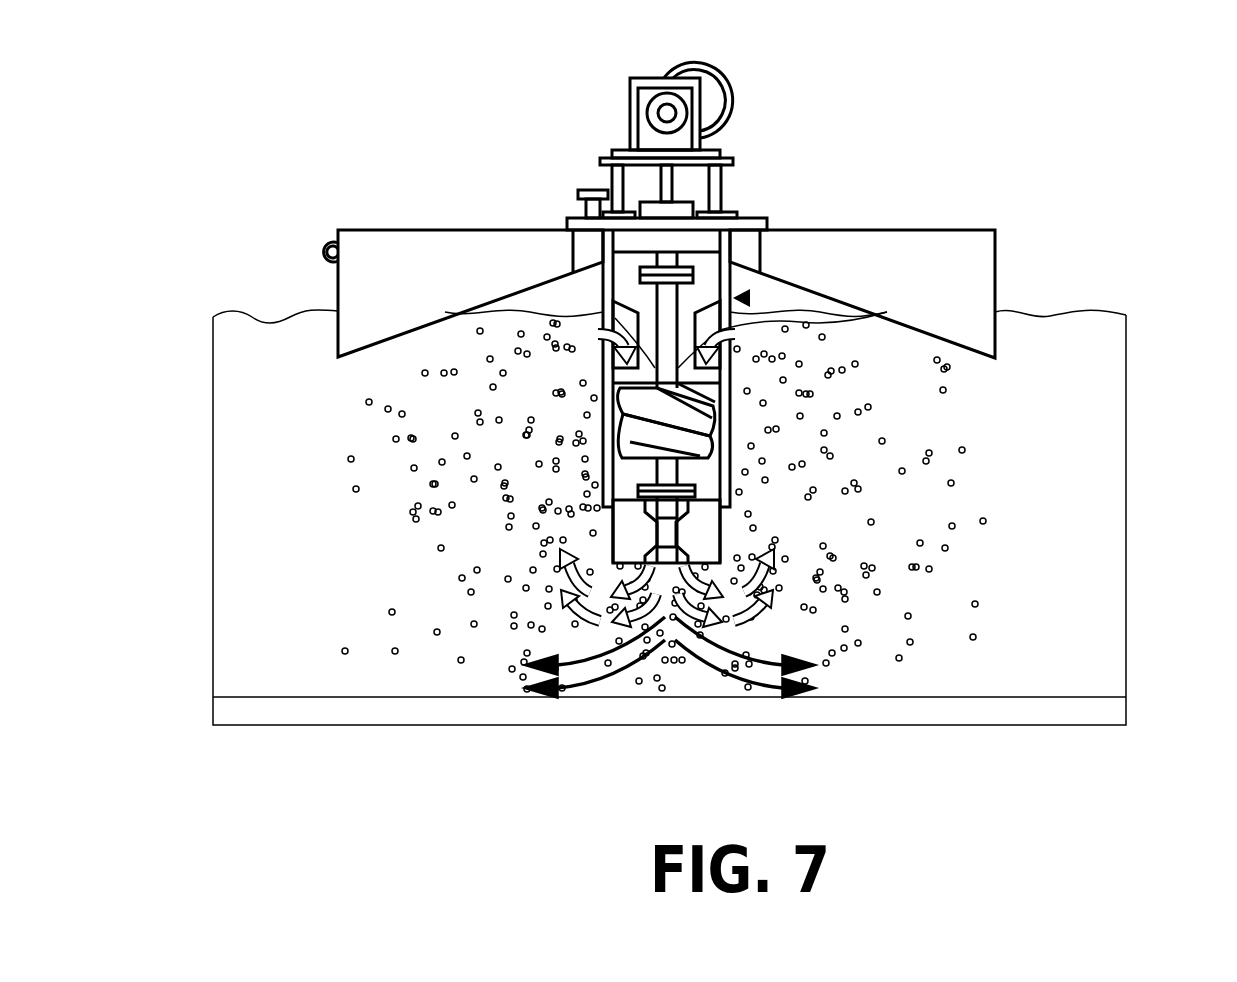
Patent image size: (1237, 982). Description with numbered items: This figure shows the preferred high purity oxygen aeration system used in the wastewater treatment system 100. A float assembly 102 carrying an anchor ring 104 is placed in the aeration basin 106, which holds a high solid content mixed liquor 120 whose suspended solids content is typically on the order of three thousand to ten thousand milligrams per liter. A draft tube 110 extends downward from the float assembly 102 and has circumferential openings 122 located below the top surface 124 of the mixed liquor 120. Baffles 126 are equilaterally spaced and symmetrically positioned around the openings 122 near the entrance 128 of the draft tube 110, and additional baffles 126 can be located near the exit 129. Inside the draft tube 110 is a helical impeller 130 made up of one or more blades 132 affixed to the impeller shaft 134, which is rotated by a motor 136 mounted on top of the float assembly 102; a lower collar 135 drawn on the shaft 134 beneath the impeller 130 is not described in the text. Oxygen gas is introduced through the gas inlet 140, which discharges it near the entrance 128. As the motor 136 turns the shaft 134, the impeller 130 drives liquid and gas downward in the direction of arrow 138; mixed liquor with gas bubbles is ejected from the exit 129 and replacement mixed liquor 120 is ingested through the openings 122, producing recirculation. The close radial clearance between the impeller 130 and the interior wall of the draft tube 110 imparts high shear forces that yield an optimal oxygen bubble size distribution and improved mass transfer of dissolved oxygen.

The wastewater treatment system 100 is at (652, 378).
The float assembly 102 is at (955, 240).
The anchor ring 104 is at (296, 255).
The aeration basin 106 is at (1088, 592).
The draft tube 110 is at (757, 461).
The high solid content mixed liquor 120 is at (300, 572).
The circumferential openings 122 is at (737, 329).
The top surface 124 is at (1108, 314).
The baffles 126 is at (612, 302).
The entrance 128 is at (624, 279).
The exit 129 is at (581, 530).
The helical impeller 130 is at (663, 417).
The blades 132 is at (695, 418).
The impeller shaft 134 is at (667, 302).
The lower bearing collar 135 is at (672, 481).
The motor 136 is at (597, 123).
The arrow 138 is at (778, 572).
The gas inlet 140 is at (541, 196).